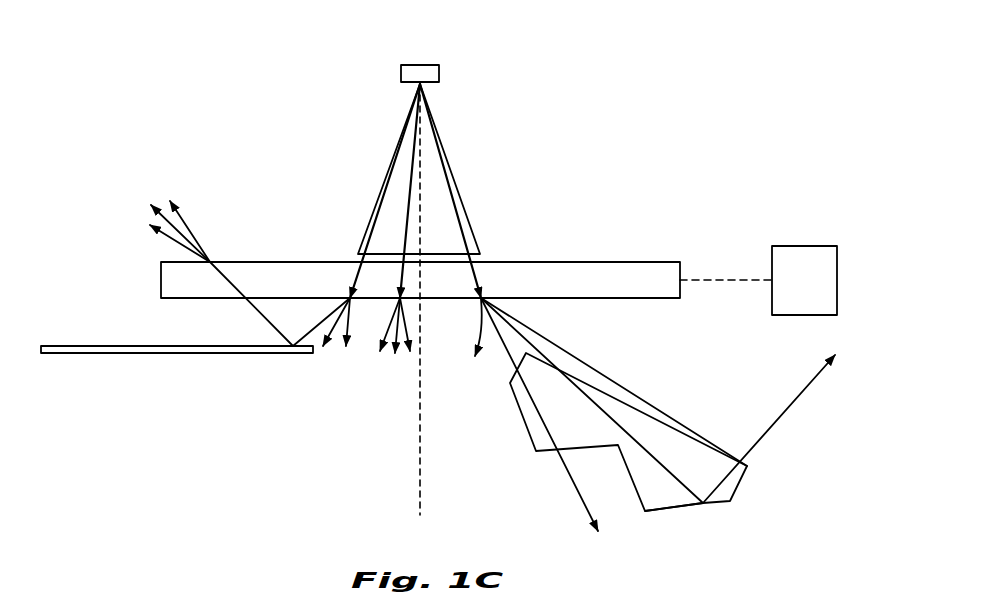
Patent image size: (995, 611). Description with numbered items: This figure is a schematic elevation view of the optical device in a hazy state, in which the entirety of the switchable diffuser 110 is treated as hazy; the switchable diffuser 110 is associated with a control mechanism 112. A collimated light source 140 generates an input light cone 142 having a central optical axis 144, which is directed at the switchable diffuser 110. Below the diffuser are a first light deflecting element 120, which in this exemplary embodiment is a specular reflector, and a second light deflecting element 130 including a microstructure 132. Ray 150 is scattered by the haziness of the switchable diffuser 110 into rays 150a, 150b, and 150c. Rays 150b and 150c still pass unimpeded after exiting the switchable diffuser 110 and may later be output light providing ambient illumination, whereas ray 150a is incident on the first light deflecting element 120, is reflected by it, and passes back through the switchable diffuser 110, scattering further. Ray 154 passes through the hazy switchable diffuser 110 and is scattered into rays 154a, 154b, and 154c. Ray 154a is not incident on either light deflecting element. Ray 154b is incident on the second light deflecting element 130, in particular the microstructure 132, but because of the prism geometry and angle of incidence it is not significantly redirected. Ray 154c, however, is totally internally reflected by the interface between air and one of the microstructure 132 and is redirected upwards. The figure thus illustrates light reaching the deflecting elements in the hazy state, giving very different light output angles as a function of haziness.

The switchable diffuser 110 is at (568, 258).
The control mechanism 112 is at (820, 288).
The first light deflecting element 120 is at (79, 343).
The second light deflecting element 130 is at (655, 416).
The microstructure 132 is at (660, 507).
The collimated light source 140 is at (436, 71).
The input light cone 142 is at (446, 157).
The central optical axis 144 is at (414, 157).
The ray 150 is at (356, 252).
The ray 150a is at (202, 197).
The ray 150b is at (333, 329).
The ray 150c is at (350, 323).
The ray 154 is at (477, 255).
The ray 154a is at (455, 343).
The ray 154b is at (572, 492).
The ray 154c is at (793, 398).